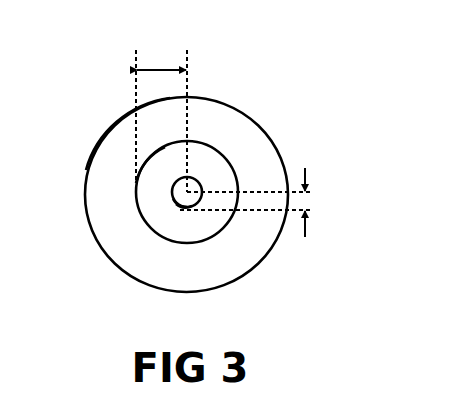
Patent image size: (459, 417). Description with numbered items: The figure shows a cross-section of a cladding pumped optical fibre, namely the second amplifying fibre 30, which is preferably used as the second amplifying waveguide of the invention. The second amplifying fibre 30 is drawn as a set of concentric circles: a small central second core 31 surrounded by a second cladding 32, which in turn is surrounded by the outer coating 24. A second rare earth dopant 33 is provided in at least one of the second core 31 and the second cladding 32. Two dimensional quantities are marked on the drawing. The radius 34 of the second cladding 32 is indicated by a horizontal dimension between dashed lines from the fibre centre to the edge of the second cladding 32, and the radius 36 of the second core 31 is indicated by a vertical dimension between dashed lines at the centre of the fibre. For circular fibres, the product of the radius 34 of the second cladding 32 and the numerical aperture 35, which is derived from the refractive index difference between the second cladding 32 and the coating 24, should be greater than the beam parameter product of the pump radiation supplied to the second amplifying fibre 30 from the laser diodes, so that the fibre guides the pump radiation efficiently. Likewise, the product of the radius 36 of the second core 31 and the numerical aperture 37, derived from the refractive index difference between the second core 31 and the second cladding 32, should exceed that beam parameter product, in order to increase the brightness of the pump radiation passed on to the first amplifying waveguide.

The coating 24 is at (128, 112).
The second amplifying fibre 30 is at (274, 281).
The second core 31 is at (174, 198).
The second cladding 32 is at (137, 183).
The second rare earth dopant 33 is at (201, 186).
The radius of the second cladding 34 is at (165, 66).
The numerical aperture 35 is at (205, 148).
The radius of the second core 36 is at (307, 227).
The numerical aperture 37 is at (180, 206).